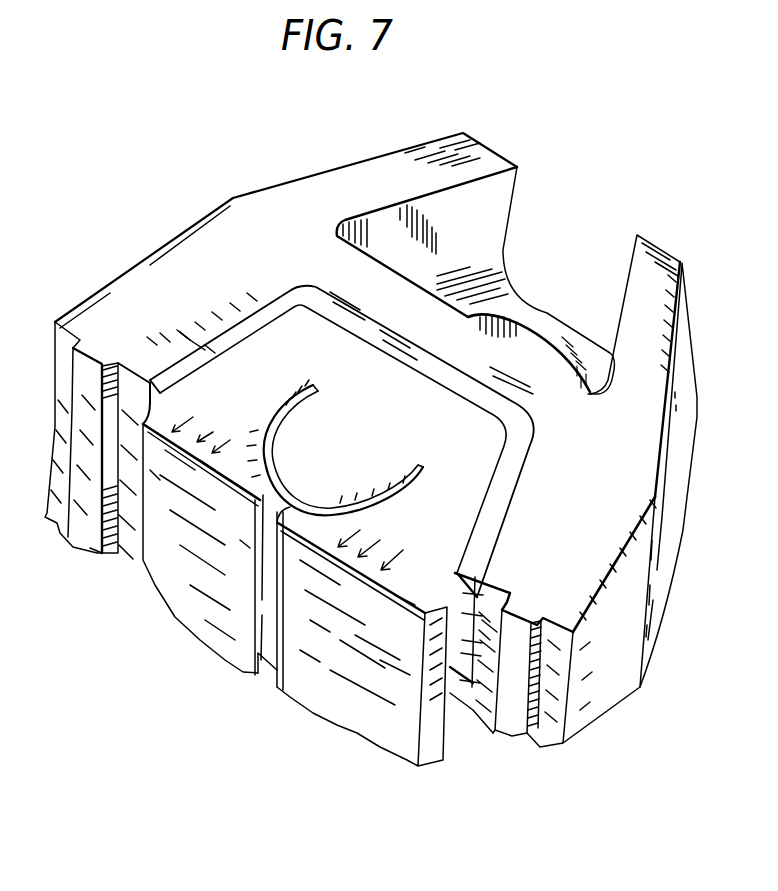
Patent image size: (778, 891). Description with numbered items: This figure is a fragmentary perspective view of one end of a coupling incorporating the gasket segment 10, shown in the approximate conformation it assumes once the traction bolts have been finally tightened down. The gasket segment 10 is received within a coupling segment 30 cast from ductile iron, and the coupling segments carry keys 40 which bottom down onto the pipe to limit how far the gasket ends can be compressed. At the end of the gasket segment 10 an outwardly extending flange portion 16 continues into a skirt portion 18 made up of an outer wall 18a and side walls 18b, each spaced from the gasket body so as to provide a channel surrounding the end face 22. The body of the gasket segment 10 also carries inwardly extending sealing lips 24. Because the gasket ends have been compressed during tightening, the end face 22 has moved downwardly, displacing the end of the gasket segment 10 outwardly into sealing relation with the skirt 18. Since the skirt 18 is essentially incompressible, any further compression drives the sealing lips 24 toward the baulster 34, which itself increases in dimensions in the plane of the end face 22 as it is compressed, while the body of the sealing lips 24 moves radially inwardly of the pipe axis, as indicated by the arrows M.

The gasket segment 10 is at (352, 737).
The outwardly extending flange portion 16 is at (475, 723).
The skirt portion 18 is at (260, 317).
The outer wall 18a is at (431, 337).
The side walls 18b is at (150, 407).
The end face 22 is at (145, 268).
The sealing lips 24 is at (223, 601).
The coupling segment 30 is at (605, 705).
The baulster 34 is at (349, 468).
The keys 40 is at (82, 552).
The arrows M is at (287, 488).